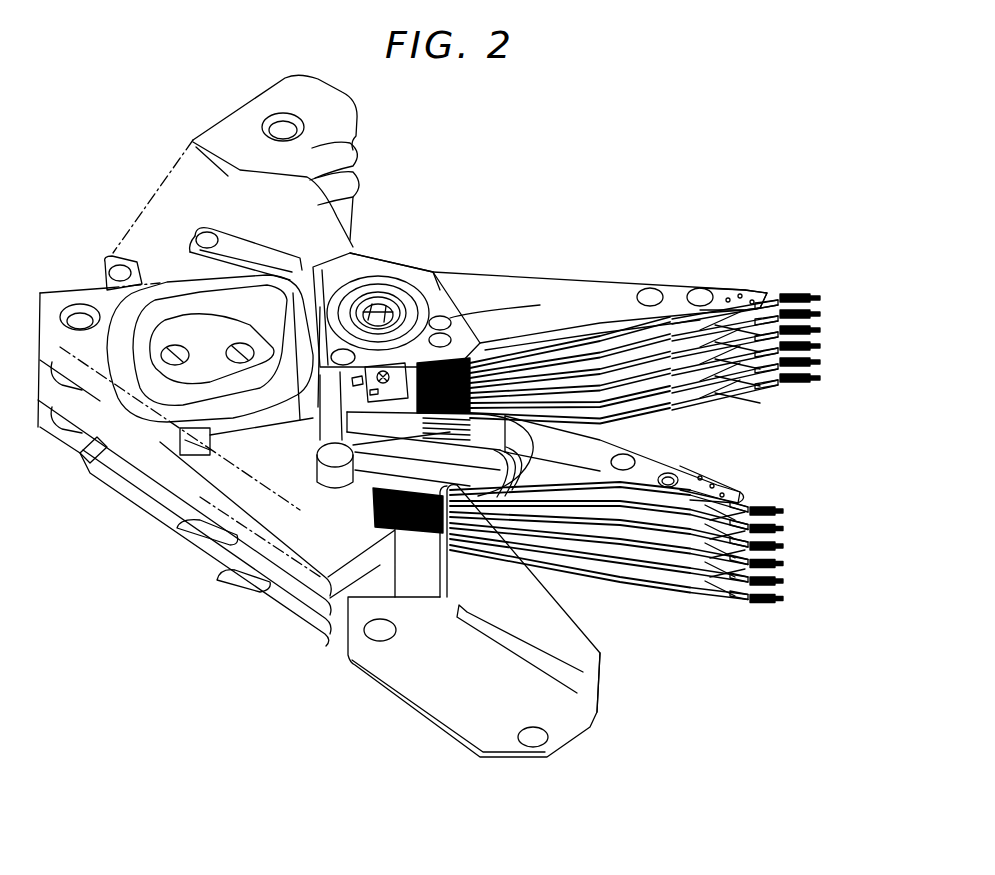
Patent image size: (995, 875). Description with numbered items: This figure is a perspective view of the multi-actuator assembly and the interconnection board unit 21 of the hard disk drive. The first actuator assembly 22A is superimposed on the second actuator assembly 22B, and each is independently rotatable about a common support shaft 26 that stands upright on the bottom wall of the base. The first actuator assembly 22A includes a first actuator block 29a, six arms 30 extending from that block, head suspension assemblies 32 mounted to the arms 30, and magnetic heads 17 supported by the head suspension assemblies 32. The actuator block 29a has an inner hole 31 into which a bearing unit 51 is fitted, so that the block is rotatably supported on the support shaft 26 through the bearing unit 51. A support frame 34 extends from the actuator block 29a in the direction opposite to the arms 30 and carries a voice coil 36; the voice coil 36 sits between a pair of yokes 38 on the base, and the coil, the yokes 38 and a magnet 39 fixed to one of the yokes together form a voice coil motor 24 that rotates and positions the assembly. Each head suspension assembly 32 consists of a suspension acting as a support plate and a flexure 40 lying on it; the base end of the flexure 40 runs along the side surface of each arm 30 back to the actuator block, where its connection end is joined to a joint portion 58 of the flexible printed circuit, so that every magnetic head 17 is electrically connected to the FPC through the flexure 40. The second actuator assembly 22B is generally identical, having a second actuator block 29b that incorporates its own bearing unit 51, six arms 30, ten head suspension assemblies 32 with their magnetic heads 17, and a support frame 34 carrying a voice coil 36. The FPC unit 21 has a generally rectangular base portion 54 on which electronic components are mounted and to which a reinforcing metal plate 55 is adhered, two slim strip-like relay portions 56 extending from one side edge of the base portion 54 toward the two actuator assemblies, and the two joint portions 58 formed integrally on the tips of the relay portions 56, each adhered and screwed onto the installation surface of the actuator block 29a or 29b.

The magnetic head 17 is at (820, 298).
The interconnection board unit (FPC unit) 21 is at (517, 652).
The first actuator assembly 22A is at (508, 243).
The second actuator assembly 22B is at (628, 596).
The voice coil motor (VCM) 24 is at (103, 506).
The support shaft 26 is at (393, 303).
The first actuator block 29a is at (416, 283).
The second actuator block 29b is at (343, 497).
The arm 30 is at (593, 363).
The inner hole 31 is at (378, 303).
The head suspension assembly (head gimbal assembly) 32 is at (729, 286).
The support frame 34 is at (175, 272).
The voice coil 36 is at (152, 290).
The yoke 38 is at (243, 567).
The magnet 39 is at (197, 520).
The flexure (interconnection member) 40 is at (718, 368).
The bearing unit 51 is at (432, 275).
The base portion 54 is at (562, 633).
The metal plate 55 is at (418, 683).
The relay portion 56 is at (512, 437).
The joint portion (interconnection board) 58 is at (397, 377).